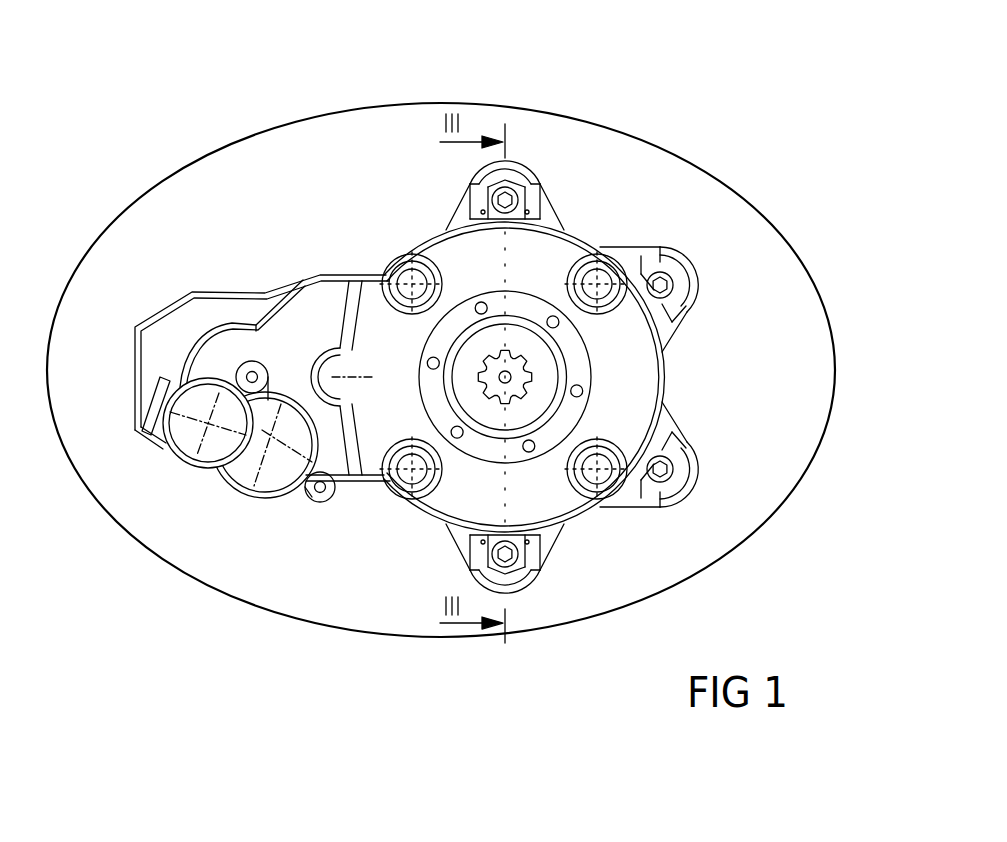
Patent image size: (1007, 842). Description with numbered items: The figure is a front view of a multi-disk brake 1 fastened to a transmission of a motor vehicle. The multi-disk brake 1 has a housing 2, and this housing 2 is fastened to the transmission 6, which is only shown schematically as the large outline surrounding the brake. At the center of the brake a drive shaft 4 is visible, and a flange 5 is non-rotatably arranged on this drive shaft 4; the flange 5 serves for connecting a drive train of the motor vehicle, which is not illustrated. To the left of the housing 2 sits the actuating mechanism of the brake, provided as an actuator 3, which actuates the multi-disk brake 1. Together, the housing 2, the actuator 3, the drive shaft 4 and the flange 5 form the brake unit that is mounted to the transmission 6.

The multi-disk brake 1 is at (595, 236).
The housing 2 is at (517, 237).
The actuator 3 is at (233, 500).
The drive shaft 4 is at (518, 365).
The flange 5 is at (583, 366).
The transmission 6 is at (705, 188).